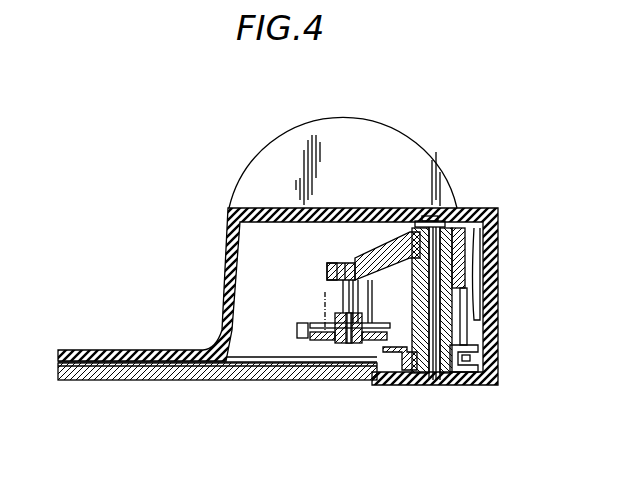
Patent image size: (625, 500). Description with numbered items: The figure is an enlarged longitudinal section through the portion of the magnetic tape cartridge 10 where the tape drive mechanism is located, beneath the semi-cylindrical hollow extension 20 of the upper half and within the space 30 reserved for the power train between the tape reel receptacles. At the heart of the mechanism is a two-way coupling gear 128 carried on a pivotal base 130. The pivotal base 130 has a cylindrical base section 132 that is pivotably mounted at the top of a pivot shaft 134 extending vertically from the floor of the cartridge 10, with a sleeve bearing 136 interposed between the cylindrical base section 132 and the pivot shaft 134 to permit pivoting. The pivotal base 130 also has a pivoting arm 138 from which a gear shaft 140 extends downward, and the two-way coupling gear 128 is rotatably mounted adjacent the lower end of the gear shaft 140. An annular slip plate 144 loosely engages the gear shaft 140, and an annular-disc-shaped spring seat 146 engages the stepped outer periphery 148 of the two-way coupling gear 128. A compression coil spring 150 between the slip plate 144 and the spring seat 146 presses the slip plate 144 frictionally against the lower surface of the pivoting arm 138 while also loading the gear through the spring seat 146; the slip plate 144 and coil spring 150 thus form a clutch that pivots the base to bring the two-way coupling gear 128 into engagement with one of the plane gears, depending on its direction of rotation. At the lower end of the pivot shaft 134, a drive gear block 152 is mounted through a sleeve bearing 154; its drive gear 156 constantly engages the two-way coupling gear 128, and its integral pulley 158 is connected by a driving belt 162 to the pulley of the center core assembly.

The cartridge 10 is at (150, 325).
The semi-cylindrical hollow extension 20 is at (260, 177).
The space for a power train 30 is at (257, 344).
The two-way coupling gear 128 is at (300, 340).
The pivotal base 130 is at (373, 256).
The cylindrical base section 132 is at (420, 222).
The pivot shaft 134 is at (444, 388).
The sleeve bearing 136 is at (454, 228).
The pivoting arm 138 is at (355, 262).
The gear shaft 140 is at (327, 288).
The annular slip plate 144 is at (327, 265).
The annular-disc-shaped spring seat 146 is at (308, 334).
The stepped outer periphery 148 is at (368, 330).
The compression coil spring 150 is at (330, 307).
The drive gear block 152 is at (388, 348).
The sleeve bearing 154 is at (420, 386).
The drive gear 156 is at (472, 236).
The pulley 158 is at (470, 382).
The driving belt 162 is at (117, 364).